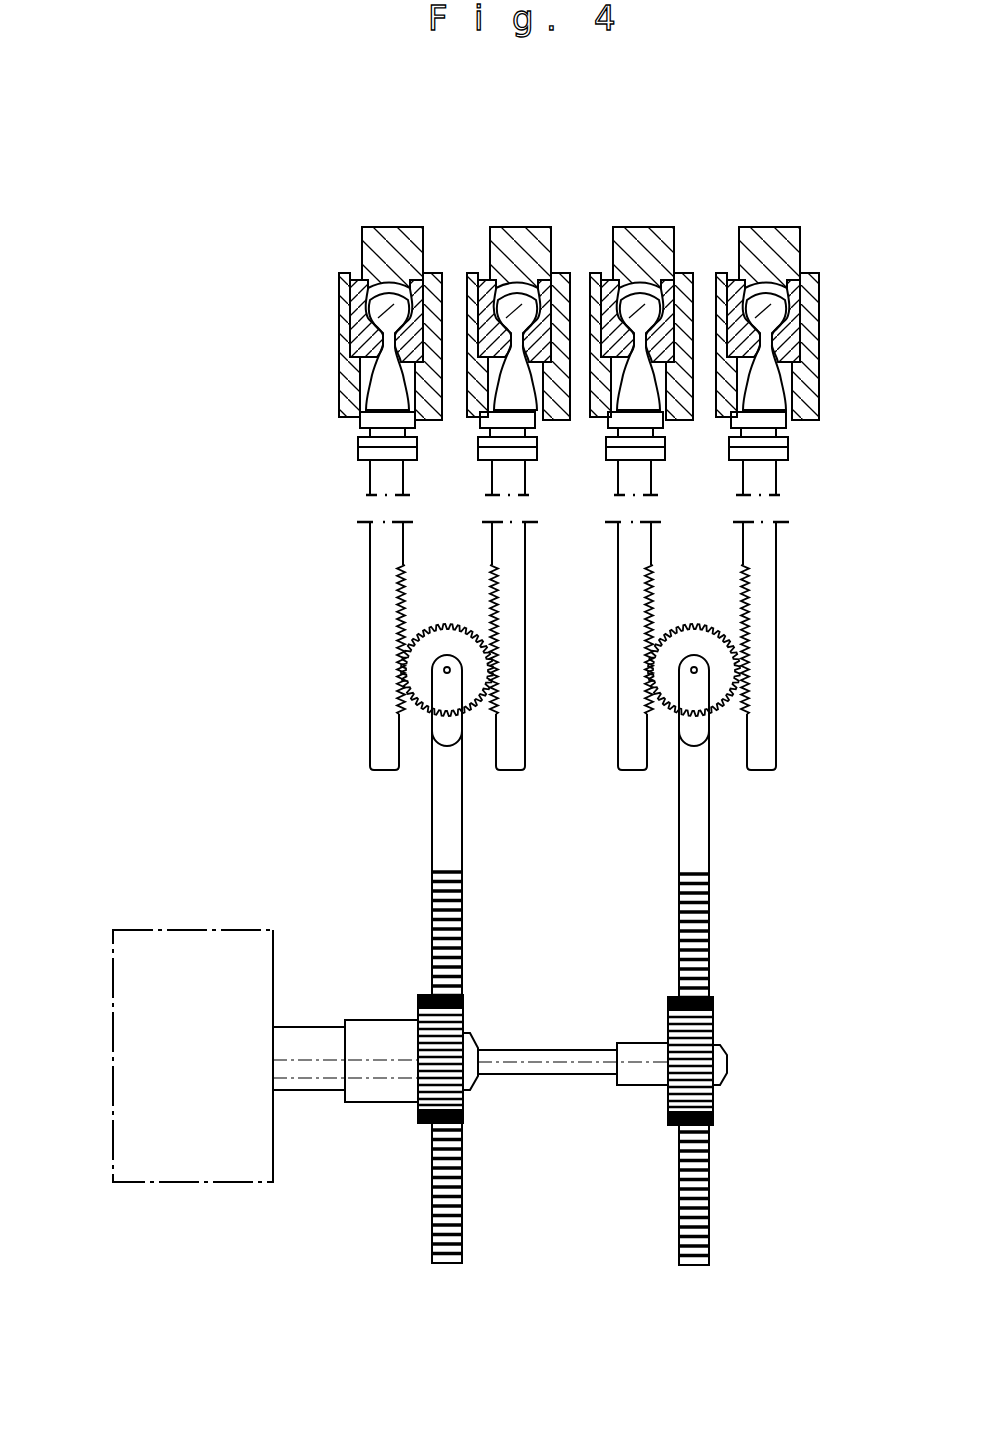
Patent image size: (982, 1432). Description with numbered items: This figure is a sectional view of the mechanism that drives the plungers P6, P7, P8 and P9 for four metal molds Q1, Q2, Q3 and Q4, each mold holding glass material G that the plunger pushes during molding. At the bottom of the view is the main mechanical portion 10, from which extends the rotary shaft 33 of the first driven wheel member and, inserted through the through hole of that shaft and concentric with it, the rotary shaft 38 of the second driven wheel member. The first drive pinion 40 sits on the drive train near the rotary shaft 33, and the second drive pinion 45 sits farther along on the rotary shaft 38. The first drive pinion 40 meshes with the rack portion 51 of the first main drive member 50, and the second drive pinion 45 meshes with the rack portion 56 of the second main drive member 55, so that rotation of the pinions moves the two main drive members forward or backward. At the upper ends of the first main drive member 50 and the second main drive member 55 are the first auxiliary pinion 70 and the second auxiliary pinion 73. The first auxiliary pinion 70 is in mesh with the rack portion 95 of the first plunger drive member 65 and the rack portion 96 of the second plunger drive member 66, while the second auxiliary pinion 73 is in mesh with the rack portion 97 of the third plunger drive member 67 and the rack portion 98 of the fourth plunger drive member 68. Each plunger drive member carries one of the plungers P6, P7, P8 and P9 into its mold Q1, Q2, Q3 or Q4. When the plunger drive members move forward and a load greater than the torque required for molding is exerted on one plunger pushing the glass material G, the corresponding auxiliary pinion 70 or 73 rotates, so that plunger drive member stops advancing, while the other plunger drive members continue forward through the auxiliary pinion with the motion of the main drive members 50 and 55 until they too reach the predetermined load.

The metal mold Q1 is at (343, 272).
The metal mold Q2 is at (473, 272).
The metal mold Q3 is at (598, 272).
The metal mold Q4 is at (727, 272).
The glass material G is at (395, 300).
The plunger P6 is at (377, 395).
The plunger P7 is at (505, 395).
The plunger P8 is at (629, 395).
The plunger P9 is at (755, 395).
The first plunger drive member 65 is at (383, 478).
The second plunger drive member 66 is at (507, 478).
The third plunger drive member 67 is at (632, 478).
The fourth plunger drive member 68 is at (757, 478).
The rack portion 95 is at (398, 568).
The rack portion 96 is at (496, 622).
The rack portion 97 is at (650, 592).
The rack portion 98 is at (753, 592).
The first auxiliary pinion 70 is at (420, 665).
The second auxiliary pinion 73 is at (713, 670).
The first main drive member 50 is at (440, 820).
The second main drive member 55 is at (690, 828).
The rack portion 51 is at (433, 915).
The rack portion 56 is at (690, 912).
The first drive pinion 40 is at (465, 995).
The second drive pinion 45 is at (713, 1000).
The main mechanical portion 10 is at (208, 1062).
The rotary shaft 33 is at (317, 1077).
The rotary shaft 38 is at (543, 1063).